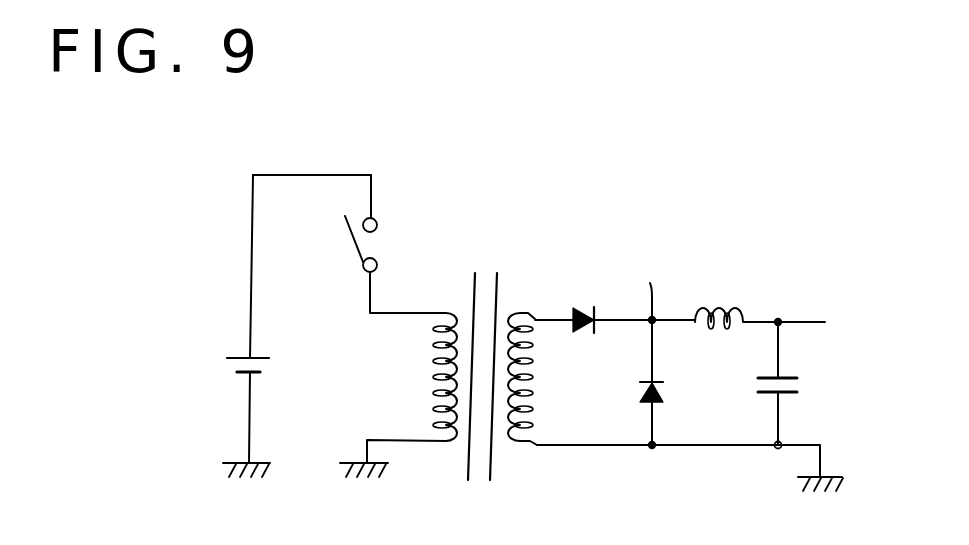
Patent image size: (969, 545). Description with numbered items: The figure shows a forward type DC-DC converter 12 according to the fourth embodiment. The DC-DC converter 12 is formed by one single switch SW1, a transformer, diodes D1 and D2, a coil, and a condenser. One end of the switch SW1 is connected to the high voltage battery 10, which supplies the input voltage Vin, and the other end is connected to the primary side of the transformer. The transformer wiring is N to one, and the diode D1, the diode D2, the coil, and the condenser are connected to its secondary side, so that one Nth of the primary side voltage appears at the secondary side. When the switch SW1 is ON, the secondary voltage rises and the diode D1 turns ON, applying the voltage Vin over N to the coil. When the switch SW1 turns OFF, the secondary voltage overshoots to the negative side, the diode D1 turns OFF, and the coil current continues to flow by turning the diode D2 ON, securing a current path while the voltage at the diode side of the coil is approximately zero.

The 36-volt battery 10 is at (236, 365).
The DC-DC converter 12 is at (566, 301).
The switch SW1 is at (392, 244).
The diode D1 is at (588, 333).
The diode D2 is at (664, 387).